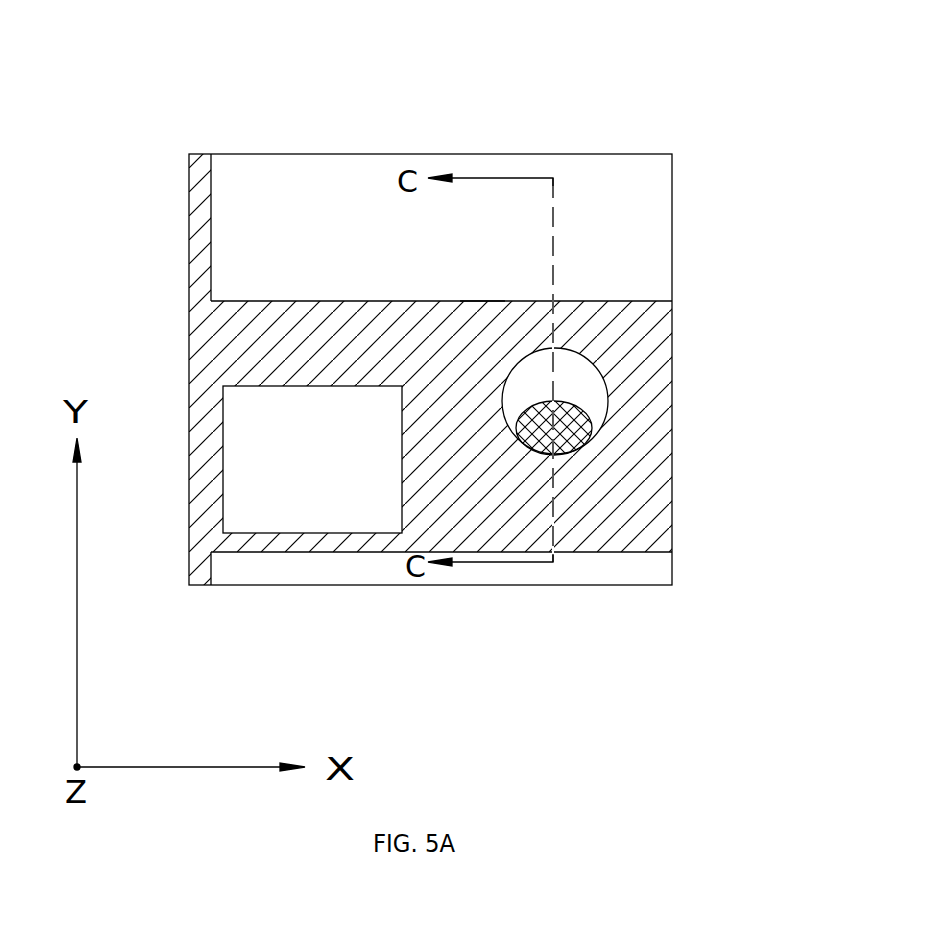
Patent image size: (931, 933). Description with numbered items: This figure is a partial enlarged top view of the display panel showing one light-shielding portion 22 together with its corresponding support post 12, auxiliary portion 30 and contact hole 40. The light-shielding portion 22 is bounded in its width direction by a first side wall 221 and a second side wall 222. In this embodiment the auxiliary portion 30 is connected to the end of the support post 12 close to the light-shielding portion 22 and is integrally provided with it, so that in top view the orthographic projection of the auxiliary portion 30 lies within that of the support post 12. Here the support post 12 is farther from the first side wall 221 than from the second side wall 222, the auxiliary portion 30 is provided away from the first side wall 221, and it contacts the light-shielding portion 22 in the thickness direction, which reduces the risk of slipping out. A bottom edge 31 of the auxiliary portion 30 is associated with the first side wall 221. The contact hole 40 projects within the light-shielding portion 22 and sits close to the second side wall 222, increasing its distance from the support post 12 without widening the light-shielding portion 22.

The support post 12 is at (570, 378).
The light-shielding portion 22 is at (641, 395).
The first side wall 221 is at (318, 301).
The second side wall 222 is at (332, 553).
The auxiliary portion 30 is at (565, 437).
The bottom edge 31 is at (482, 301).
The contact hole 40 is at (272, 410).